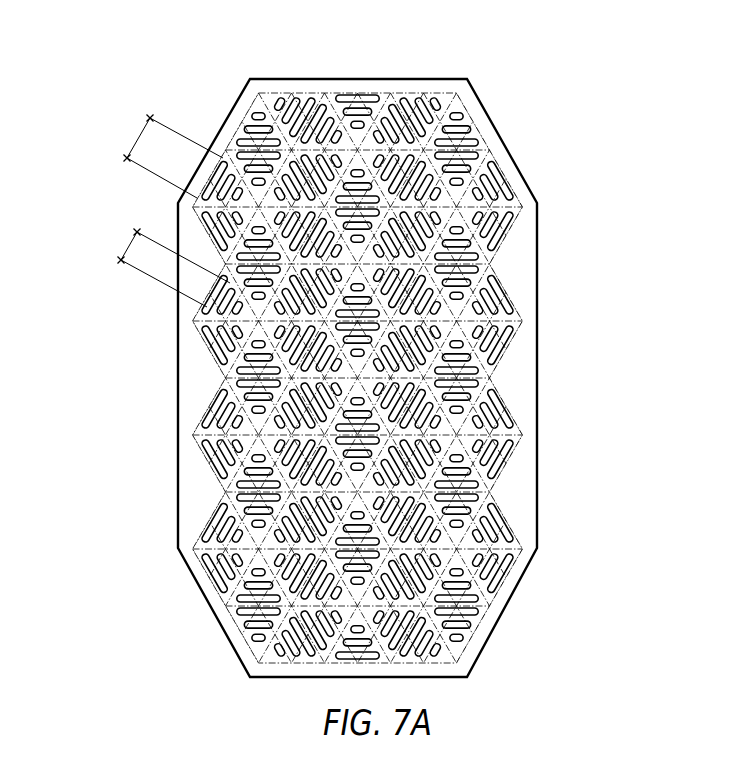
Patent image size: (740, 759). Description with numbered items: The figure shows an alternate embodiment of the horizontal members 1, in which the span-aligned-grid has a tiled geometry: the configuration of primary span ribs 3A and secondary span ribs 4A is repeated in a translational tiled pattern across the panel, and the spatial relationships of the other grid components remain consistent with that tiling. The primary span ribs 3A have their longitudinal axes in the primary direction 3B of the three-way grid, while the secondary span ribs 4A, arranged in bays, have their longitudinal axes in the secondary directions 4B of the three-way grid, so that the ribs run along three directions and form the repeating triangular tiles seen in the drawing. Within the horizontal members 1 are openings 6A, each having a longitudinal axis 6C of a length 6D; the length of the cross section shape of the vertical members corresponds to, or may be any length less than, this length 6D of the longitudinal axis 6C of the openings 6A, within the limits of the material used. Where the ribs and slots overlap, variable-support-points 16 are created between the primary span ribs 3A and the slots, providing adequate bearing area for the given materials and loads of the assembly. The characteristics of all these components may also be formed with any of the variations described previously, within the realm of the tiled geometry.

The horizontal members 1 is at (450, 79).
The variable-support-points 16 is at (483, 155).
The longitudinal axis of the openings 6C is at (524, 171).
The openings 6A is at (510, 197).
The secondary span ribs 4A is at (529, 244).
The secondary directions 4B is at (493, 242).
The primary span ribs 3A is at (529, 350).
The primary direction 3B is at (495, 335).
The length of the longitudinal axis of the openings 6D is at (138, 140).